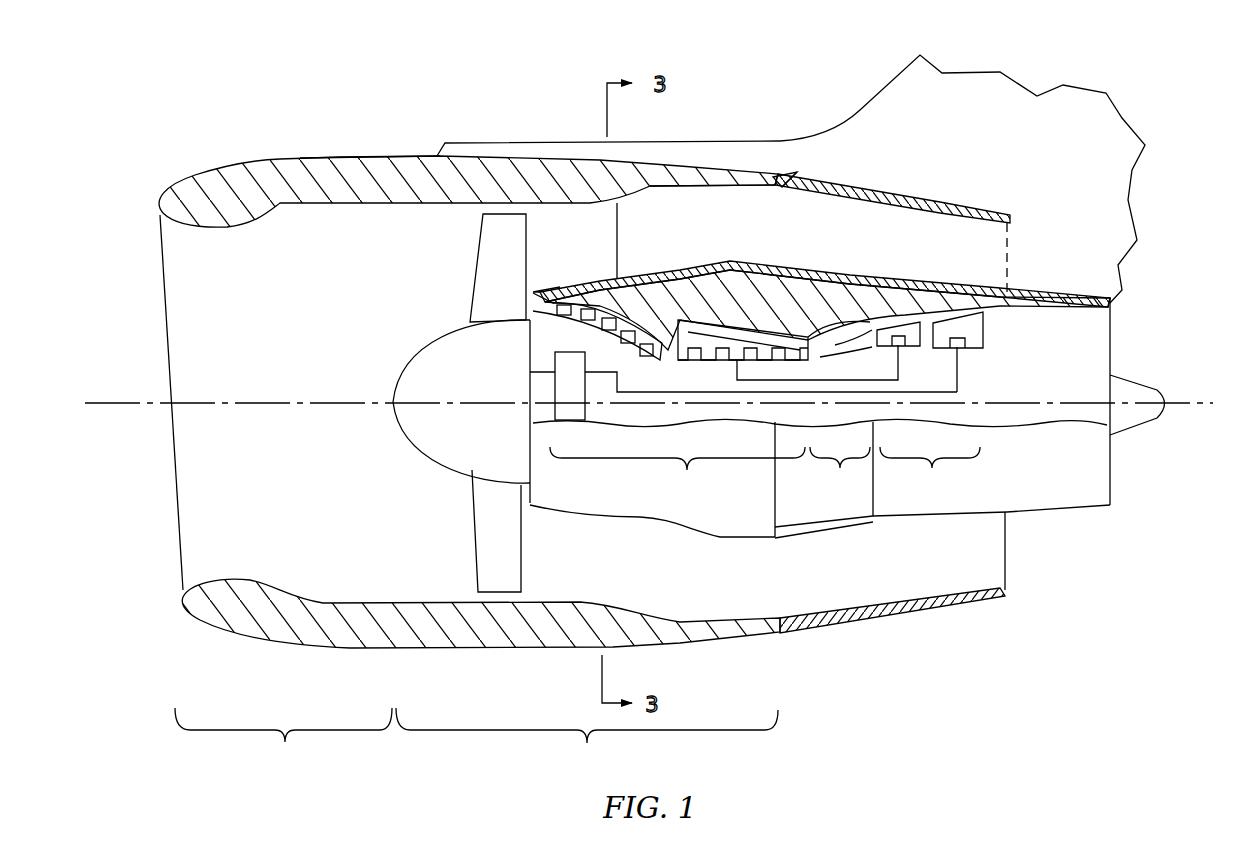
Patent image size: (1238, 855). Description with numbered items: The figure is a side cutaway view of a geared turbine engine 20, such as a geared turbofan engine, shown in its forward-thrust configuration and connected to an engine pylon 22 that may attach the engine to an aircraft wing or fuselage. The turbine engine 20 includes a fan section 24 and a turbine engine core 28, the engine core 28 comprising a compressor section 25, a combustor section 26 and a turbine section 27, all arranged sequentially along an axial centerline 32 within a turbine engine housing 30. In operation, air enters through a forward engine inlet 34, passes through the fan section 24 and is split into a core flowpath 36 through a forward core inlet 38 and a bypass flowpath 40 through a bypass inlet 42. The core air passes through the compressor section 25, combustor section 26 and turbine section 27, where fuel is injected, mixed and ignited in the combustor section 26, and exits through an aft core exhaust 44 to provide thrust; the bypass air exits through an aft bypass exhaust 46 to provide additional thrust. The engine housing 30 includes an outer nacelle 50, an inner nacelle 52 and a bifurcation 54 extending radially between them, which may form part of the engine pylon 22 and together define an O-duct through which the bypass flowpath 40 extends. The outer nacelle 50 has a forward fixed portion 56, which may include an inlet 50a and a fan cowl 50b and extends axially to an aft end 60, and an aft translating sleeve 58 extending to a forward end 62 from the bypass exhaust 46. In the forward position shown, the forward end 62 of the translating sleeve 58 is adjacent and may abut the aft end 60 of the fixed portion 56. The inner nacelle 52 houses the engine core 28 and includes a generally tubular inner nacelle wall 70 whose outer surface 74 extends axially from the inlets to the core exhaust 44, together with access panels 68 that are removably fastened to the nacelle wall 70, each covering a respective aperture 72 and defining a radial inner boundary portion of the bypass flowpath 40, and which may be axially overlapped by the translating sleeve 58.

The geared turbine engine 20 is at (140, 104).
The engine pylon 22 is at (1122, 112).
The fan section 24 is at (437, 490).
The compressor section 25 is at (679, 406).
The combustor section 26 is at (840, 406).
The turbine section 27 is at (930, 402).
The turbine engine core 28 is at (996, 333).
The turbine engine housing 30 is at (296, 138).
The axial centerline 32 is at (1193, 405).
The forward engine inlet 34 is at (158, 302).
The core flowpath 36 is at (1005, 318).
The forward core inlet 38 is at (530, 311).
The bypass flowpath 40 is at (562, 230).
The bypass inlet 42 is at (527, 255).
The aft core exhaust 44 is at (1112, 350).
The aft bypass exhaust 46 is at (1015, 242).
The outer nacelle 50 is at (230, 165).
The inlet 50a is at (283, 740).
The fan cowl 50b is at (587, 740).
The inner nacelle 52 is at (725, 258).
The bifurcation 54 is at (720, 210).
The forward fixed portion 56 is at (361, 165).
The translating sleeve 58 is at (860, 187).
The aft end 60 is at (797, 172).
The forward end 62 is at (770, 188).
The access panel 68 is at (873, 503).
The inner nacelle wall 70 is at (862, 274).
The aperture 72 is at (770, 500).
The outer surface 74 is at (1090, 497).